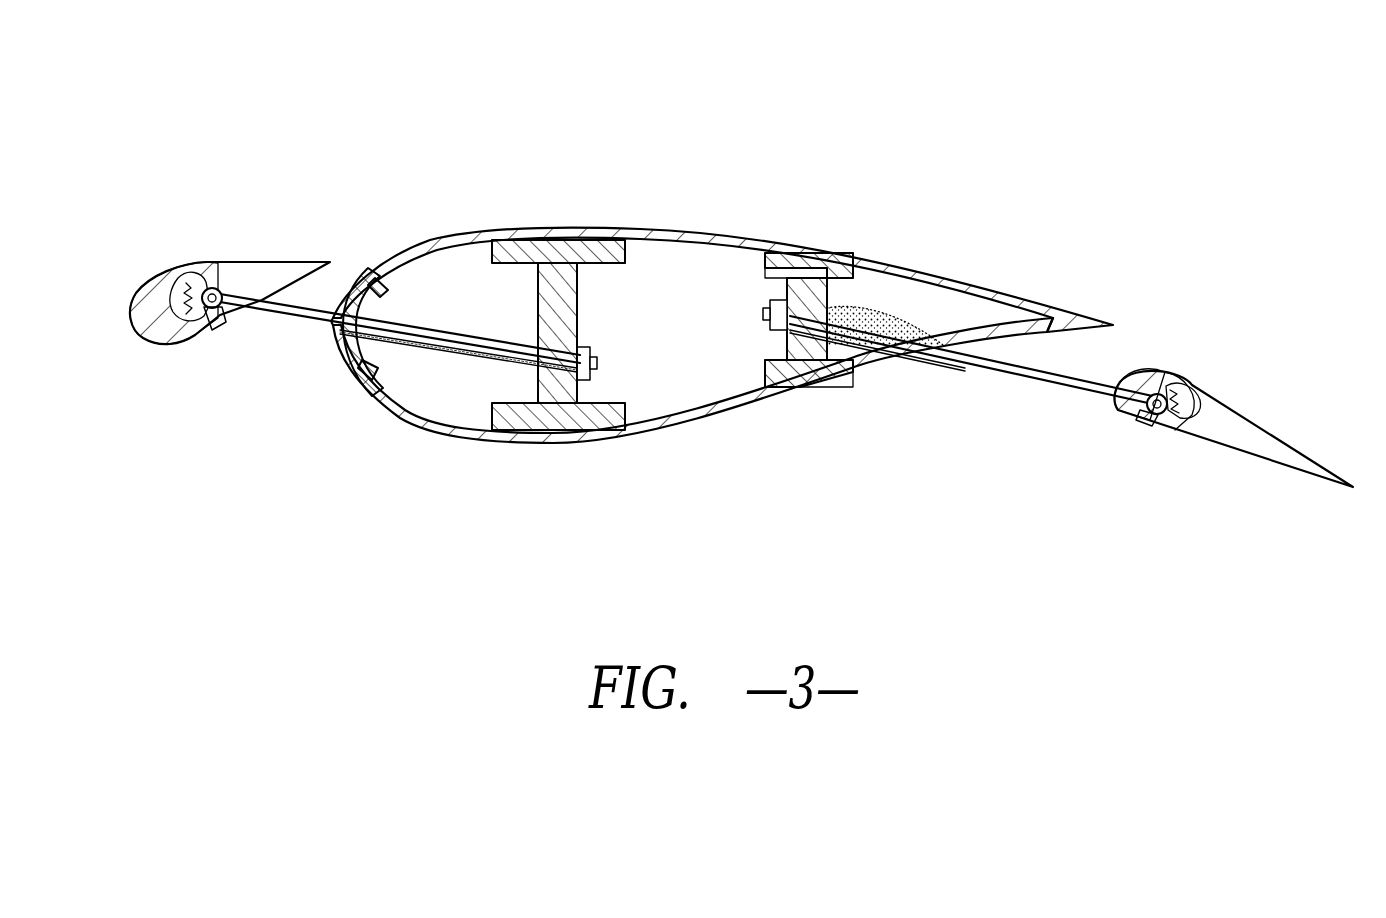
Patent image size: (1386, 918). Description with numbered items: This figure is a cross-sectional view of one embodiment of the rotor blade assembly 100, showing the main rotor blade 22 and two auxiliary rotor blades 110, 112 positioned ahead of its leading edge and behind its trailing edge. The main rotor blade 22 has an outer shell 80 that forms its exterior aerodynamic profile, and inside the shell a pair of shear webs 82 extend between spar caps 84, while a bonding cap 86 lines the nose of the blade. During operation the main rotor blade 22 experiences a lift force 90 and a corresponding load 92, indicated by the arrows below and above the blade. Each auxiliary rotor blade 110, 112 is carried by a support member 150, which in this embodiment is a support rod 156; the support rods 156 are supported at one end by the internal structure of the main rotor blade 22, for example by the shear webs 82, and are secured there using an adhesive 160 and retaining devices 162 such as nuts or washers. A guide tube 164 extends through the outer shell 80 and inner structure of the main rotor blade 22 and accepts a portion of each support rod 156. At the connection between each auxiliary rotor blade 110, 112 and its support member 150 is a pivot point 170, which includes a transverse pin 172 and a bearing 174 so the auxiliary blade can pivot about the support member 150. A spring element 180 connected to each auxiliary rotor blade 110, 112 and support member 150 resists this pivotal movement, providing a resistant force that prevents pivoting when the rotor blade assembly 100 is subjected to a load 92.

The main rotor blade 22 is at (684, 230).
The outer shell 80 is at (530, 248).
The shear web 82 is at (583, 298).
The spar cap 84 is at (460, 250).
The bonding cap 86 is at (372, 395).
The lift force 90 is at (208, 403).
The load 92 is at (208, 186).
The rotor blade assembly 100 is at (1130, 178).
The auxiliary rotor blade 110 is at (188, 242).
The auxiliary rotor blade 112 is at (1298, 431).
The support member 150 is at (302, 330).
The support rod 156 is at (1062, 388).
The adhesive 160 is at (892, 312).
The retaining device 162 is at (618, 380).
The guide tube 164 is at (432, 340).
The pivot point 170 is at (210, 312).
The transverse pin 172 is at (220, 290).
The bearing 174 is at (222, 312).
The spring element 180 is at (200, 288).